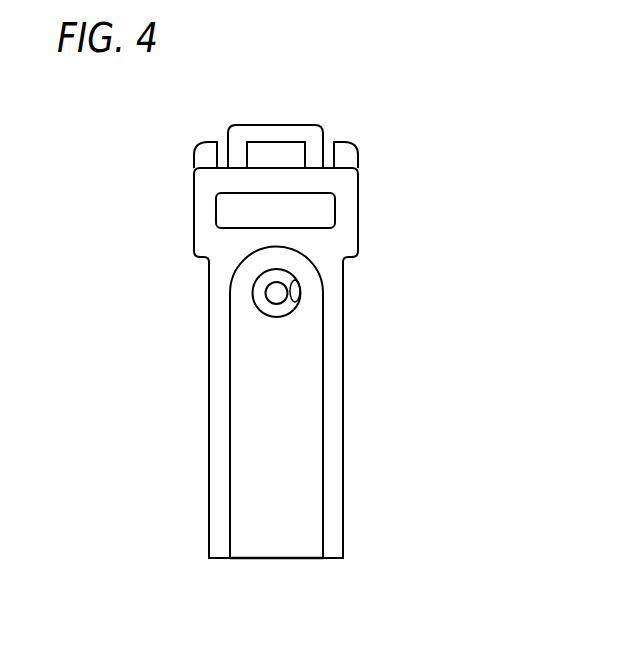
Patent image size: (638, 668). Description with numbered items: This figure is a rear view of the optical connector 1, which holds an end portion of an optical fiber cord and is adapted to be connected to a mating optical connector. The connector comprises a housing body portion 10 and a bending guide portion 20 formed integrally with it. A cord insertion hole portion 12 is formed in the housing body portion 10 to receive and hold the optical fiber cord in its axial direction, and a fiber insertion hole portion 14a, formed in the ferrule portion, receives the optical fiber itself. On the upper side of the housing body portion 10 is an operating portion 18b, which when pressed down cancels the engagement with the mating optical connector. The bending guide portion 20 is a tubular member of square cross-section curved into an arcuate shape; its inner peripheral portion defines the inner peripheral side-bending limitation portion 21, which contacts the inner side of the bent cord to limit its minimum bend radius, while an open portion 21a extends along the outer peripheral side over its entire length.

The optical connector 1 is at (452, 322).
The housing body portion 10 is at (343, 275).
The cord insertion hole portion 12 is at (298, 305).
The fiber insertion hole portion 14a is at (273, 285).
The operating portion 18b is at (277, 122).
The bending guide portion 20 is at (343, 518).
The inner peripheral side-bending limitation portion 21 is at (280, 552).
The open portion 21a is at (307, 442).